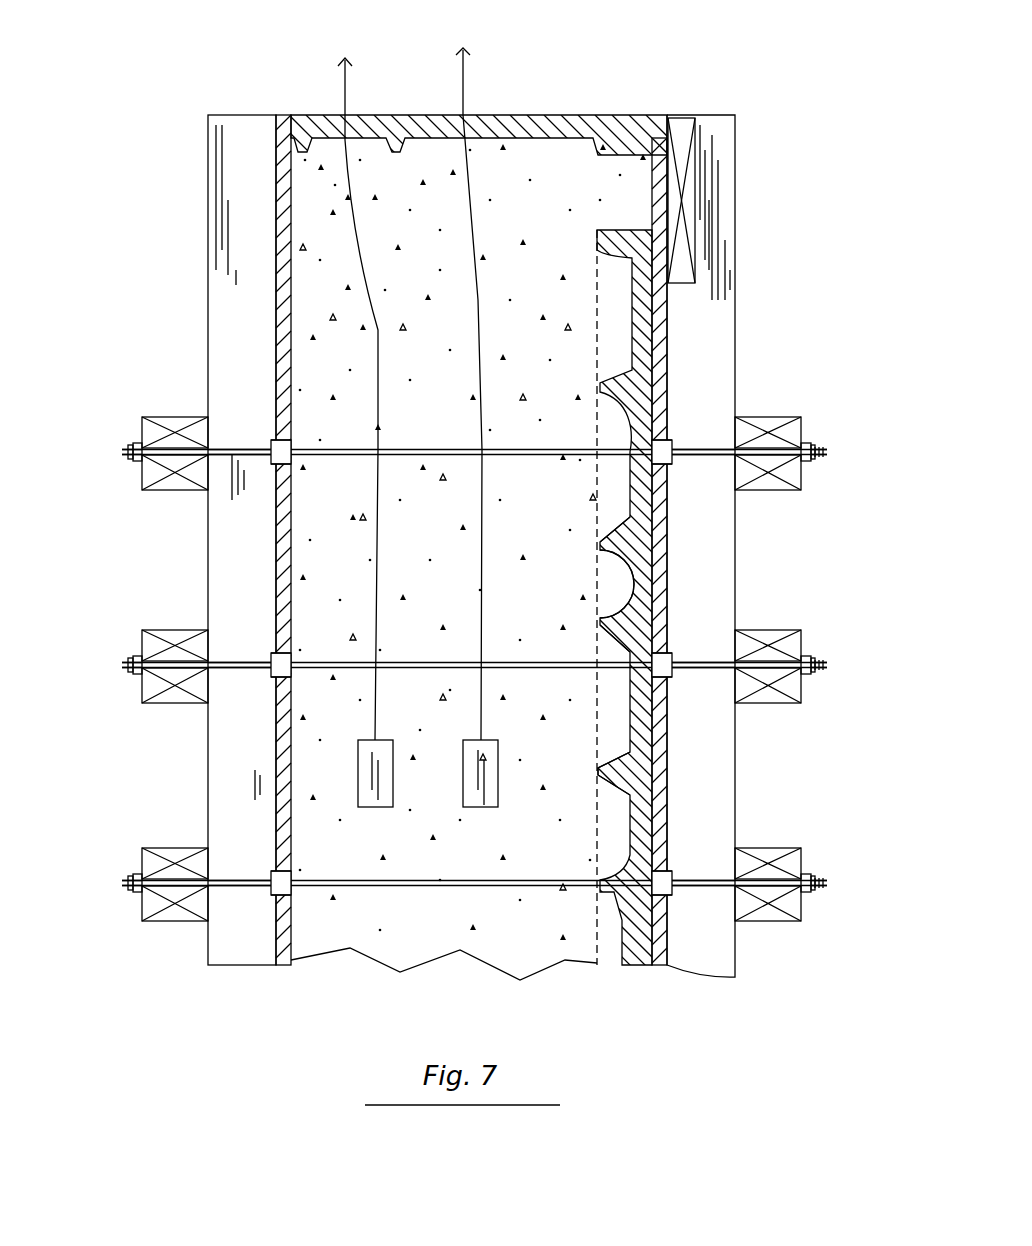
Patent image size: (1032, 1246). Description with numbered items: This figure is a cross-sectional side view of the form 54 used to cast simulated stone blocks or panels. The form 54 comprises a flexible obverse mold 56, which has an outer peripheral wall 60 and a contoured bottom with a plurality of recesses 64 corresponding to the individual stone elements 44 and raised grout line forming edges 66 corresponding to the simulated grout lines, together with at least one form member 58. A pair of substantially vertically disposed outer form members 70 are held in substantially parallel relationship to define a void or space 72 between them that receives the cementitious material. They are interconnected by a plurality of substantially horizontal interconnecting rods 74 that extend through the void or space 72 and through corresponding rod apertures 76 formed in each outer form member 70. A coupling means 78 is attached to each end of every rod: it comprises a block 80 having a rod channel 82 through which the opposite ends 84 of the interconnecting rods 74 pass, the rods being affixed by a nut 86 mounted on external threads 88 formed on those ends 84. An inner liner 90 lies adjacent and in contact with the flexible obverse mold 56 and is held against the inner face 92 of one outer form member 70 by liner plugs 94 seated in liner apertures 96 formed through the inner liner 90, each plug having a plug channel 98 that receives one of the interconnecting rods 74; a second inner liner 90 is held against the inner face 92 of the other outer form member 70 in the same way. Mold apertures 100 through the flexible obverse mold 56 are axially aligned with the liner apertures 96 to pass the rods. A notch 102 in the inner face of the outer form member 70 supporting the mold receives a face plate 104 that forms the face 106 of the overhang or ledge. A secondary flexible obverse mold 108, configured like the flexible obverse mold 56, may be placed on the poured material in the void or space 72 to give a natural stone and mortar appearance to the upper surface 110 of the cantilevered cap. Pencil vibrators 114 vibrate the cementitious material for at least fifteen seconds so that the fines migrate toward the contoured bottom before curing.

The individual stone elements 44 is at (600, 596).
The form 54 is at (537, 100).
The flexible obverse mold 56 is at (565, 355).
The form member 58 is at (190, 258).
The outer peripheral wall 60 is at (615, 228).
The recesses 64 is at (612, 510).
The raised grout line forming edges 66 is at (597, 542).
The outer form members 70 is at (235, 320).
The void or space 72 is at (330, 115).
The interconnecting rods 74 is at (402, 448).
The rod apertures 76 is at (250, 457).
The coupling means 78 is at (865, 371).
The block 80 is at (142, 419).
The rod channel 82 is at (192, 443).
The opposite ends 84 is at (192, 443).
The nut 86 is at (140, 462).
The external threads 88 is at (122, 452).
The inner liner 90 is at (274, 184).
The inner face 92 is at (274, 222).
The liner plugs 94 is at (278, 440).
The liner apertures 96 is at (281, 440).
The plug channel 98 is at (281, 465).
The mold apertures 100 is at (627, 460).
The notch 102 is at (699, 230).
The face plate 104 is at (695, 157).
The face 106 is at (668, 197).
The secondary flexible obverse mold 108 is at (495, 100).
The upper surface 110 is at (333, 153).
The pencil vibrators 114 is at (378, 742).